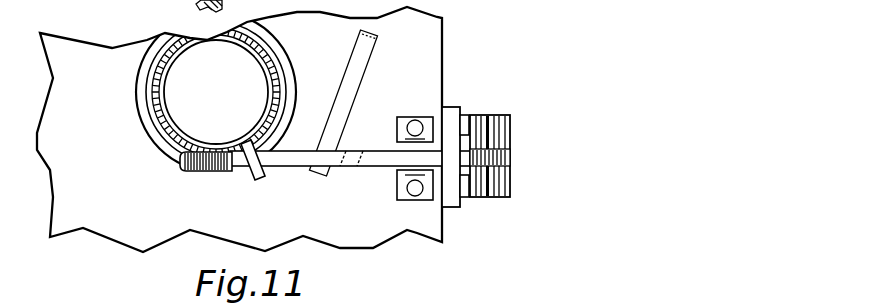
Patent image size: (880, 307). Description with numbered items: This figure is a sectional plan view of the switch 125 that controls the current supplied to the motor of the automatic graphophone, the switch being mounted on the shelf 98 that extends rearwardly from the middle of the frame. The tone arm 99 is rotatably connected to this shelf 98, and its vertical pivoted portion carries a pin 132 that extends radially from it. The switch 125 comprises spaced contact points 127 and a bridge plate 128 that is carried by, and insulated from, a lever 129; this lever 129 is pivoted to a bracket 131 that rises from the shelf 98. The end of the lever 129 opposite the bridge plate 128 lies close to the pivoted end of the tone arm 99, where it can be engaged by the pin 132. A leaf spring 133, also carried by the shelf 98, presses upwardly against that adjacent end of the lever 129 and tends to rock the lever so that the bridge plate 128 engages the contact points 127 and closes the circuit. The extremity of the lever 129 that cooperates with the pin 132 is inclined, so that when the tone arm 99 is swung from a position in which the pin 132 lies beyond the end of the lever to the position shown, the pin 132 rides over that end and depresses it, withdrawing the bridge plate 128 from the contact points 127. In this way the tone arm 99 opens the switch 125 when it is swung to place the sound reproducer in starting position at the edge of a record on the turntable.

The shelf 98 is at (239, 129).
The tone arm 99 is at (277, 63).
The switch 125 is at (518, 155).
The contact points 127 is at (464, 114).
The bridge plate 128 is at (482, 198).
The lever 129 is at (367, 155).
The bracket 131 is at (395, 173).
The pin 132 is at (262, 180).
The leaf spring 133 is at (353, 85).